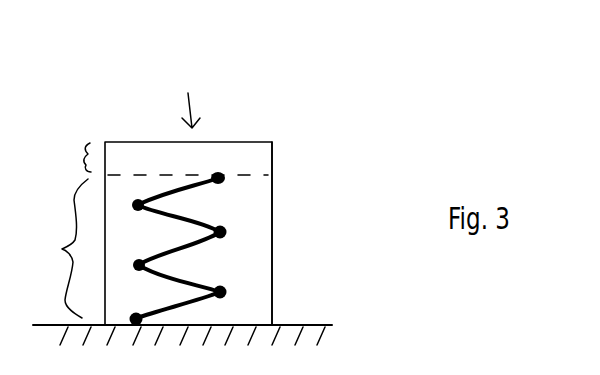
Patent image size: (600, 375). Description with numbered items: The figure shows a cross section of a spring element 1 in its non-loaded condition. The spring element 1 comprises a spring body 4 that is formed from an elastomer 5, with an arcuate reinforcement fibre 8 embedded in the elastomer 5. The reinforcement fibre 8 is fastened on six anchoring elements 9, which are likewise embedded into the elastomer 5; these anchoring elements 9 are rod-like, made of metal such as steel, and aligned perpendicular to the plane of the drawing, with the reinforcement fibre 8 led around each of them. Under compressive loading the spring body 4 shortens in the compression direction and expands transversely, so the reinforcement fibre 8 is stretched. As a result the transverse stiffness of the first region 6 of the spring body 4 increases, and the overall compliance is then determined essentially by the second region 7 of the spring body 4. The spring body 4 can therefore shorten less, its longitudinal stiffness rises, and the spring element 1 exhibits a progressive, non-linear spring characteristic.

The spring element 1 is at (67, 100).
The spring body 4 is at (275, 272).
The elastomer 5 is at (137, 156).
The first region 6 is at (43, 254).
The second region 7 is at (63, 156).
The reinforcement fibre 8 is at (207, 222).
The anchoring elements 9 is at (225, 288).